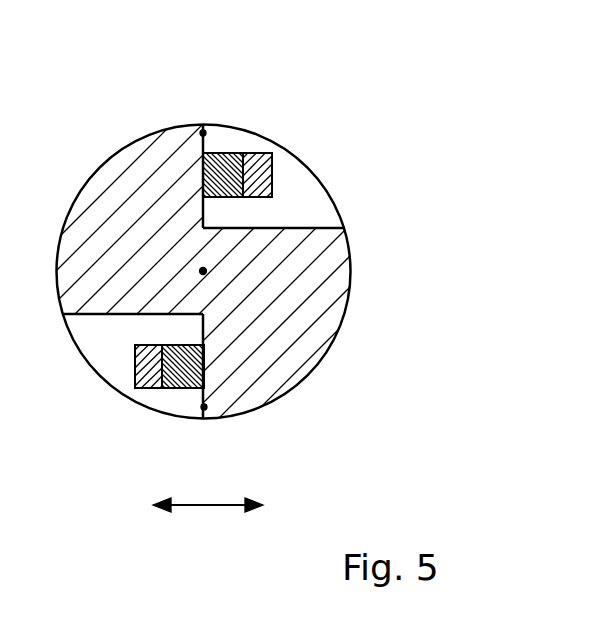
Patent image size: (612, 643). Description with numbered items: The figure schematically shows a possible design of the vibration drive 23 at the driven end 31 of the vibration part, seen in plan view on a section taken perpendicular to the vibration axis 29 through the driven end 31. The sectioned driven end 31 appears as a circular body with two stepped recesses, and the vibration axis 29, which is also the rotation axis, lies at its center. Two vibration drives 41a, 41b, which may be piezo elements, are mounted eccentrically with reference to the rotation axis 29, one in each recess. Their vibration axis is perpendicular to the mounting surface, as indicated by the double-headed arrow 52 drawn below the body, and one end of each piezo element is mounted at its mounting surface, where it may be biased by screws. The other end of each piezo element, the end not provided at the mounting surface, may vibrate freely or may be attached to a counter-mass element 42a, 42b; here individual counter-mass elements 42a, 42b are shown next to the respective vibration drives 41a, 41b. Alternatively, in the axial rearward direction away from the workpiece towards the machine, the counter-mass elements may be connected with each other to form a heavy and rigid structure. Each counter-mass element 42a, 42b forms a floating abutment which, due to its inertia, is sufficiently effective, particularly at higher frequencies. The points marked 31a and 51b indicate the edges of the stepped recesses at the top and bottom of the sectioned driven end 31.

The driven end 31 is at (306, 225).
The vibration drive 23 is at (275, 113).
The shaft edge 31a is at (203, 133).
The edge 51b is at (204, 407).
The vibration drive 41a is at (228, 172).
The counter-mass element 42a is at (262, 173).
The counter-mass element 42b is at (142, 387).
The vibration drive 41b is at (178, 375).
The vibration axis 29 is at (203, 271).
The arrow 52 is at (208, 508).